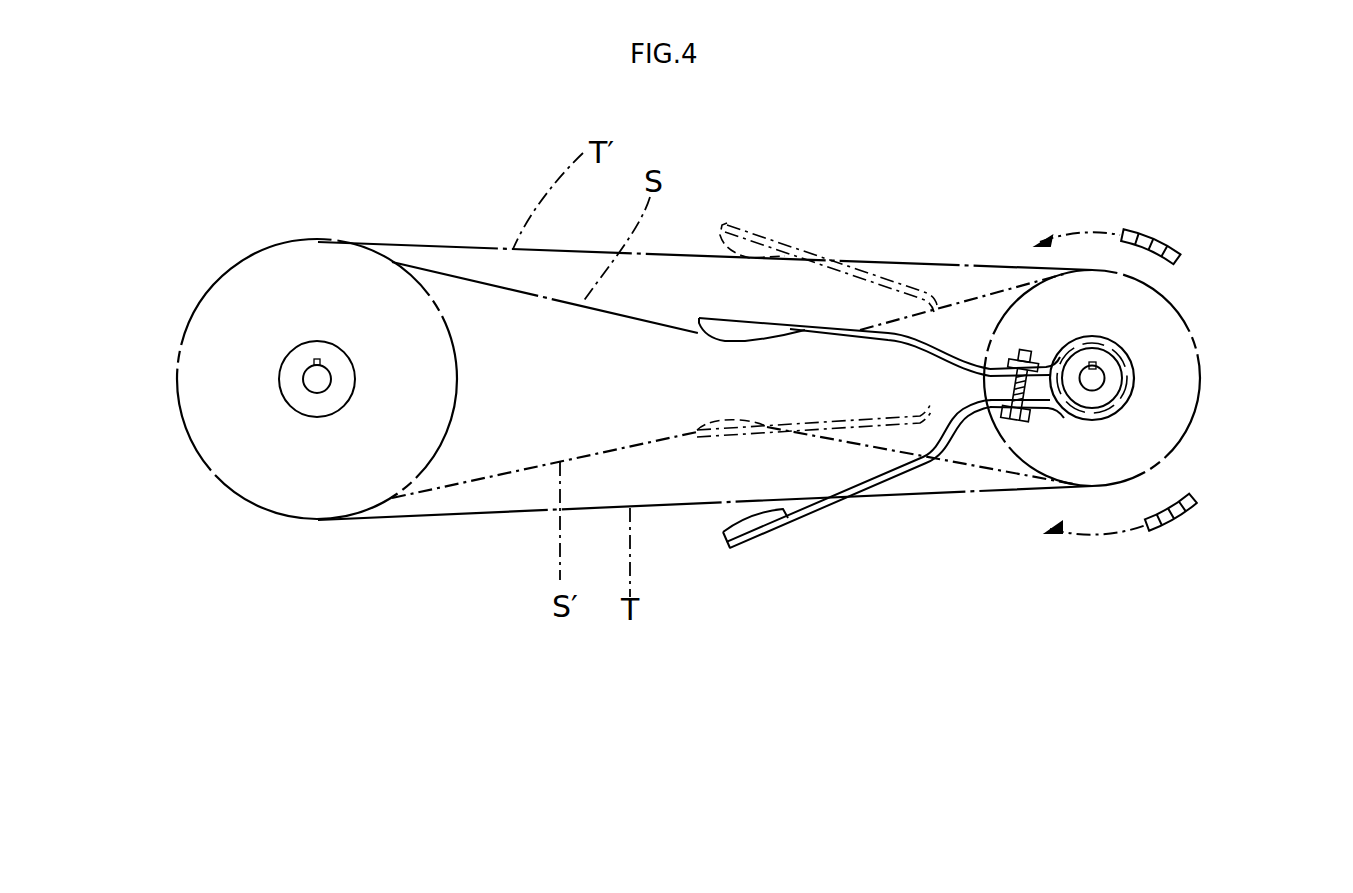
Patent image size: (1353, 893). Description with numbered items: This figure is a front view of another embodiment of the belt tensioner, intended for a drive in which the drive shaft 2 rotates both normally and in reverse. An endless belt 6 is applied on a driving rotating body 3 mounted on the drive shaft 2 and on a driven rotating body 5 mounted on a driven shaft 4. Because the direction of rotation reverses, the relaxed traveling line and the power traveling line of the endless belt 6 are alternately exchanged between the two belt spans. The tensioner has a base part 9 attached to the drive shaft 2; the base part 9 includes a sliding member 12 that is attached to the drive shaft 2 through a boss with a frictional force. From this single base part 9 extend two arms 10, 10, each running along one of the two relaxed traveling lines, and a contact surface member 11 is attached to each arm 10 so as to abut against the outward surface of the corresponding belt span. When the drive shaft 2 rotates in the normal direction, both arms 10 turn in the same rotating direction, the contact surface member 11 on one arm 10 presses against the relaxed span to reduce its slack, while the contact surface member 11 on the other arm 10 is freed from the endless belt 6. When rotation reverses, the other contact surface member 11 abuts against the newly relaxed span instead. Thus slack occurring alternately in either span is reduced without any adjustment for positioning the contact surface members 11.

The drive shaft 2 is at (1104, 370).
The driving rotating body 3 is at (1177, 398).
The driven shaft 4 is at (306, 388).
The driven rotating body 5 is at (240, 463).
The endless belt 6 is at (662, 320).
The base part 9 is at (1078, 423).
The arm 10 is at (832, 328).
The contact surface member 11 is at (752, 240).
The sliding member 12 is at (1113, 410).